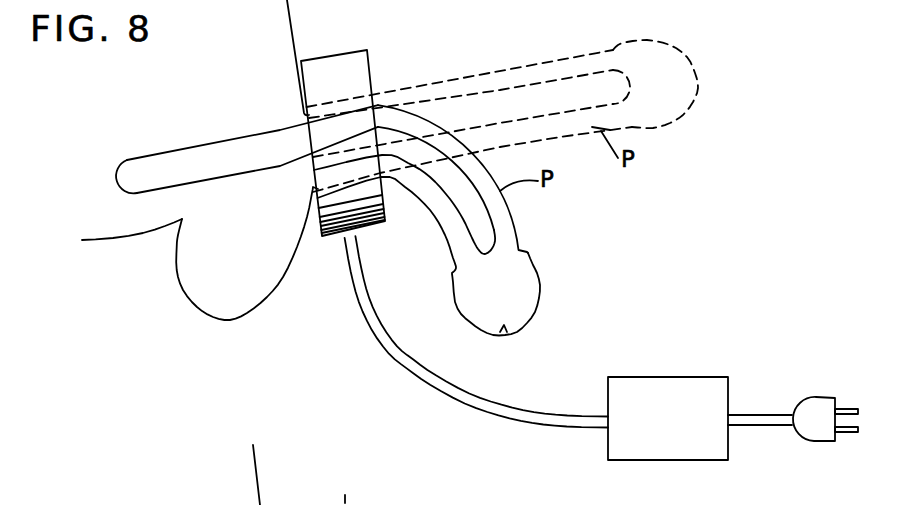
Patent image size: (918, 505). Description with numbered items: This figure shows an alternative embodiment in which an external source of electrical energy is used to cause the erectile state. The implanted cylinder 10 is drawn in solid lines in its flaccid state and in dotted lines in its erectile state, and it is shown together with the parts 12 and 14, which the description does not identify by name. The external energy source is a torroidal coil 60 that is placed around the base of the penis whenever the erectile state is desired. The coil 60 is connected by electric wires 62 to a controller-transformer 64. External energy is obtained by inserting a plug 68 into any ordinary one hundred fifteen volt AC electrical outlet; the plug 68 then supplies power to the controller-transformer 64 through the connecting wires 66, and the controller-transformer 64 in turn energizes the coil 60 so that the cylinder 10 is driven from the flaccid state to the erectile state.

The cylinder 10 is at (285, 113).
The support arm / belt member 12 is at (218, 148).
The sleeve / penile enclosure 14 is at (587, 70).
The torroidal coil 60 is at (347, 53).
The electric wires 62 is at (436, 391).
The controller-transformer 64 is at (683, 455).
The connecting wires 66 is at (762, 420).
The plug 68 is at (813, 437).